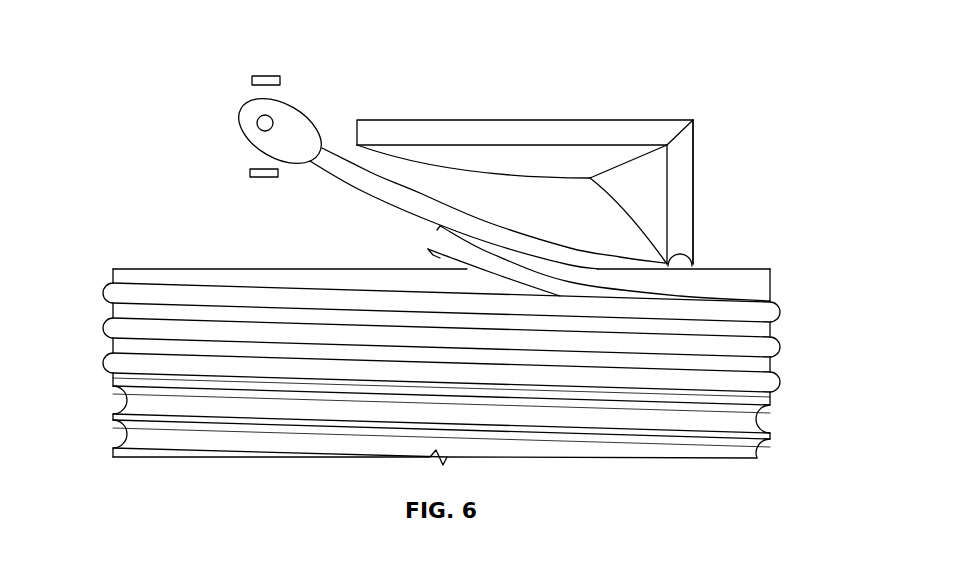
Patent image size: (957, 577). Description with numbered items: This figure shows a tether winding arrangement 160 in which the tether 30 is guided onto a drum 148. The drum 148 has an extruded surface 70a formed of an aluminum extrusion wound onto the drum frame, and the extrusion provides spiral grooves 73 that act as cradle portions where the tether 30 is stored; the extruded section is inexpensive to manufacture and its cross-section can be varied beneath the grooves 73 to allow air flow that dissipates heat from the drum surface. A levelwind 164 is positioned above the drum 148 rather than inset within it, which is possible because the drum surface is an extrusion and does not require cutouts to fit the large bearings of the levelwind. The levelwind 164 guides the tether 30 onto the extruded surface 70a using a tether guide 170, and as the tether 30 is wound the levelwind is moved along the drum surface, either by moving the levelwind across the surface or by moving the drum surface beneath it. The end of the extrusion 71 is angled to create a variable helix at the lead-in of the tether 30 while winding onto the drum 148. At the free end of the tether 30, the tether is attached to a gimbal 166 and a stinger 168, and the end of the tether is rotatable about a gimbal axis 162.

The actuator assembly 160 is at (148, 36).
The gimbal axis 162 is at (257, 125).
The levelwind 164 is at (585, 160).
The gimbal 166 is at (265, 76).
The stinger 168 is at (321, 143).
The tether guide 170 is at (697, 260).
The drum 148 is at (742, 224).
The extruded surface 70a is at (771, 280).
The end of the extrusion 71 is at (428, 255).
The spiral grooves 73 is at (773, 372).
The tether 30 is at (778, 384).